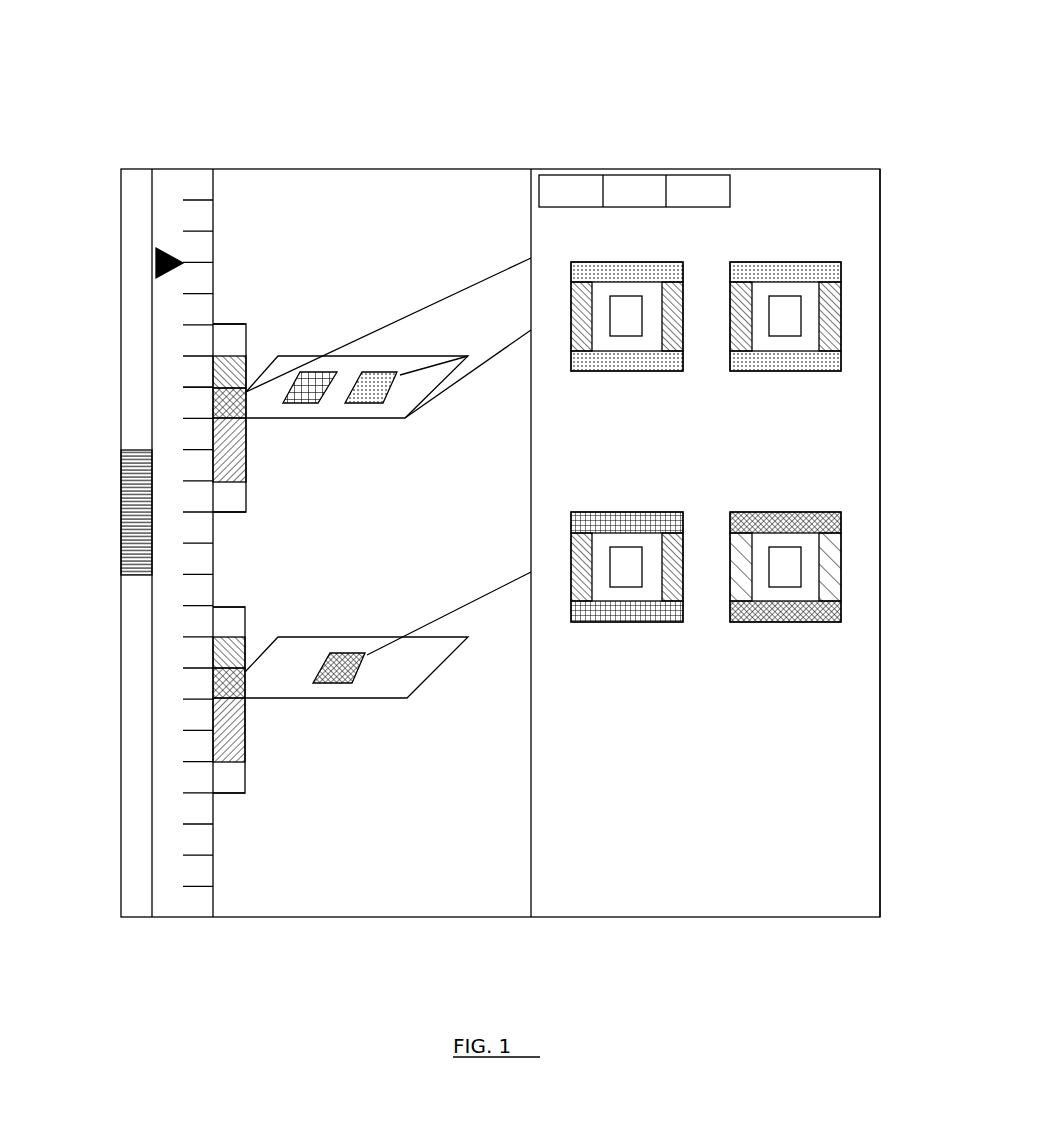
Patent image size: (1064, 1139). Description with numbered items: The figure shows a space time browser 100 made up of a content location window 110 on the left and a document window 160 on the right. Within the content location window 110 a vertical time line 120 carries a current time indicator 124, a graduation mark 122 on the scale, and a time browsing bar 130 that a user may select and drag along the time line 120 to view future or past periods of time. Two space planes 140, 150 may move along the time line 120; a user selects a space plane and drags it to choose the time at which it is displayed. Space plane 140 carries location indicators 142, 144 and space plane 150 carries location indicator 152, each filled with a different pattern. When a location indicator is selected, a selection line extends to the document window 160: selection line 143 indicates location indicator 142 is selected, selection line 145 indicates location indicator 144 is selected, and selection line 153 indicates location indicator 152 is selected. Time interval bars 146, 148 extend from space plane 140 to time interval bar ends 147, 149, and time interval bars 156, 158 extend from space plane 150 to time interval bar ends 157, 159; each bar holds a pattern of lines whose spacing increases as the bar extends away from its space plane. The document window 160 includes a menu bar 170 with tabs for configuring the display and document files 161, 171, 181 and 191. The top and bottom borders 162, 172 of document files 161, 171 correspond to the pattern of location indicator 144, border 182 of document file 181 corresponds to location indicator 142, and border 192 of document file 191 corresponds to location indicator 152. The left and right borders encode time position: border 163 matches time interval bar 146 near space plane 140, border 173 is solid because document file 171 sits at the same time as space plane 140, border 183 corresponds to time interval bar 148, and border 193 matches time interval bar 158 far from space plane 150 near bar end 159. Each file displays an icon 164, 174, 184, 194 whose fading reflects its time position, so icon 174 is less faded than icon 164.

The space time browser 100 is at (738, 55).
The content location window 110 is at (342, 917).
The time line 120 is at (213, 306).
The graduation mark 122 is at (183, 387).
The current time indicator 124 is at (156, 263).
The time browsing bar 130 is at (121, 520).
The space plane 140 is at (418, 410).
The location indicator 142 is at (312, 372).
The selection line 143 is at (433, 310).
The location indicator 144 is at (362, 403).
The selection line 145 is at (452, 360).
The time interval bar 146 is at (246, 348).
The time interval bar end 147 is at (222, 322).
The time interval bar 148 is at (318, 459).
The time interval bar end 149 is at (223, 513).
The space plane 150 is at (410, 697).
The location indicator 152 is at (332, 687).
The selection line 153 is at (430, 625).
The time interval bar 156 is at (245, 636).
The time interval bar end 157 is at (220, 605).
The time interval bar 158 is at (245, 728).
The time interval bar end 159 is at (230, 795).
The document window 160 is at (658, 917).
The document file 161 is at (610, 262).
The border 162 is at (583, 275).
The border 163 is at (670, 342).
The icon 164 is at (627, 310).
The menu bar 170 is at (612, 188).
The document file 171 is at (863, 243).
The border 172 is at (833, 273).
The border 173 is at (828, 342).
The icon 174 is at (782, 308).
The document file 181 is at (605, 622).
The border 182 is at (580, 545).
The border 183 is at (657, 530).
The icon 184 is at (628, 573).
The document file 191 is at (798, 622).
The border 192 is at (883, 571).
The border 193 is at (825, 537).
The icon 194 is at (782, 575).